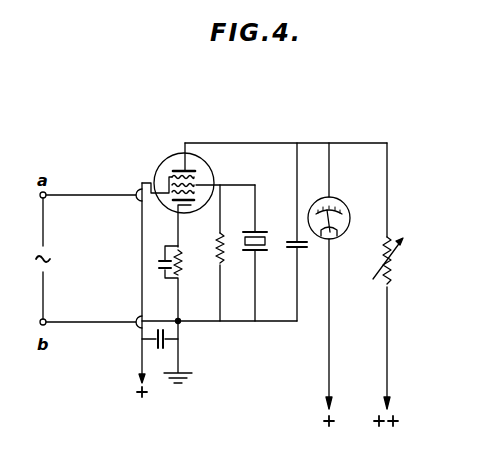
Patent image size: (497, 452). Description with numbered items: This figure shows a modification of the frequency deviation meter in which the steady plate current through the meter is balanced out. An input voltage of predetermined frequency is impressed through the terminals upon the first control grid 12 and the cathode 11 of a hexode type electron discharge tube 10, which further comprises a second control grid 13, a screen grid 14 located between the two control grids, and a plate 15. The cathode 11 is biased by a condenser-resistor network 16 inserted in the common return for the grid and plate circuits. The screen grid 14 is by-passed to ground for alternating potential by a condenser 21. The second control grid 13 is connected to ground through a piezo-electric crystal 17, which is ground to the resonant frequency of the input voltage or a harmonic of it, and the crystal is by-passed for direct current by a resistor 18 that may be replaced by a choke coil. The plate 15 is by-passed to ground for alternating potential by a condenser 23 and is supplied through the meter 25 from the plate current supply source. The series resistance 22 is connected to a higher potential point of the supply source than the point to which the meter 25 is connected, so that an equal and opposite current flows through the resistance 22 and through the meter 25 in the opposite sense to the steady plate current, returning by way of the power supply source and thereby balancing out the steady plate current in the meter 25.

The hexode type electron discharge tube 10 is at (207, 170).
The cathode 11 is at (191, 204).
The first control grid 12 is at (179, 195).
The second control grid 13 is at (199, 184).
The screen grid 14 is at (170, 176).
The plate 15 is at (182, 168).
The condenser-resistor network 16 is at (167, 272).
The piezo-electric crystal 17 is at (258, 250).
The resistor 18 is at (220, 258).
The condenser 21 is at (165, 340).
The series resistance 22 is at (392, 267).
The condenser 23 is at (300, 248).
The meter 25 is at (343, 208).